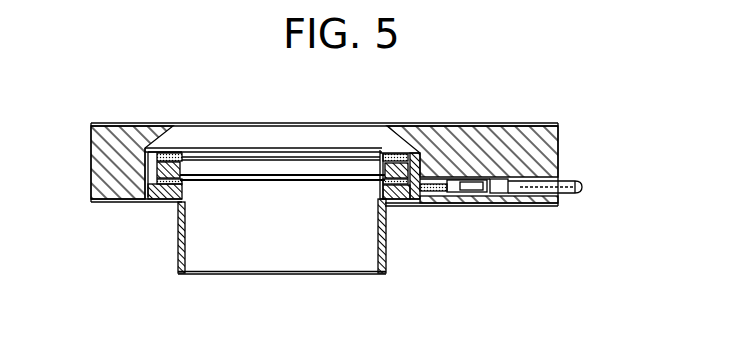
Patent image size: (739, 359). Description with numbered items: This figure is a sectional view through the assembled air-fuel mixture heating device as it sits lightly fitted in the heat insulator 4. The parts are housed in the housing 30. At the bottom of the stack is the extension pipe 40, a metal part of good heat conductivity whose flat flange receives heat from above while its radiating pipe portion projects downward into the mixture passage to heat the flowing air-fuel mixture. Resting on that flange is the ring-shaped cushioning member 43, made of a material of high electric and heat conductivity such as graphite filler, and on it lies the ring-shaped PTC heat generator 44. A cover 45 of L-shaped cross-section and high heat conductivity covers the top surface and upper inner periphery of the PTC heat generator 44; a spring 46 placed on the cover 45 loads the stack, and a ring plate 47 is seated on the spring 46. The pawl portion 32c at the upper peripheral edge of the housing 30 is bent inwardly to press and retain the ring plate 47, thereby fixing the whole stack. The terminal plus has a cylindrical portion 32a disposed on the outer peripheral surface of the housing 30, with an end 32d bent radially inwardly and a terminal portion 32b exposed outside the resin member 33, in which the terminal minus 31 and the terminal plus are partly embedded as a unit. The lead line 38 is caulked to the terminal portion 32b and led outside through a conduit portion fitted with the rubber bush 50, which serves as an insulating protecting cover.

The heat insulator 4 is at (541, 134).
The housing 30 is at (366, 194).
The terminal minus 31 is at (384, 201).
The cylindrical portion 32a is at (144, 168).
The terminal portion 32b is at (457, 186).
The pawl portion 32c is at (257, 148).
The end of cylindrical portion 32d is at (158, 185).
The resin member 33 is at (414, 185).
The lead line 38 is at (570, 194).
The extension pipe 40 is at (187, 206).
The cushioning member 43 is at (293, 181).
The PTC heat generator 44 is at (190, 178).
The cover 45 is at (378, 151).
The spring 46 is at (163, 148).
The ring plate 47 is at (396, 154).
The rubber bush 50 is at (514, 194).